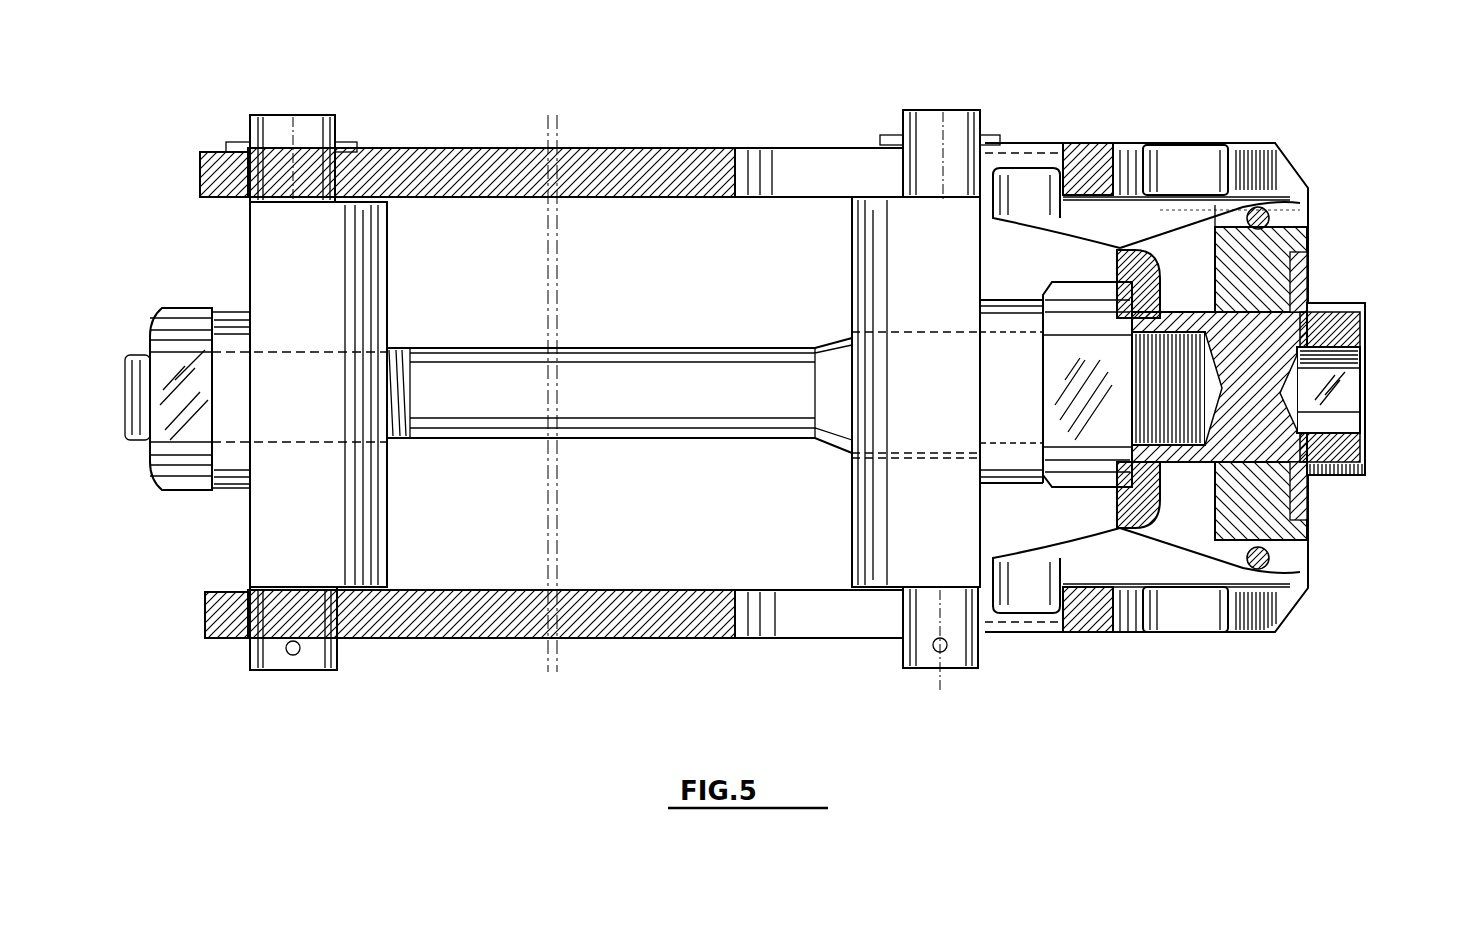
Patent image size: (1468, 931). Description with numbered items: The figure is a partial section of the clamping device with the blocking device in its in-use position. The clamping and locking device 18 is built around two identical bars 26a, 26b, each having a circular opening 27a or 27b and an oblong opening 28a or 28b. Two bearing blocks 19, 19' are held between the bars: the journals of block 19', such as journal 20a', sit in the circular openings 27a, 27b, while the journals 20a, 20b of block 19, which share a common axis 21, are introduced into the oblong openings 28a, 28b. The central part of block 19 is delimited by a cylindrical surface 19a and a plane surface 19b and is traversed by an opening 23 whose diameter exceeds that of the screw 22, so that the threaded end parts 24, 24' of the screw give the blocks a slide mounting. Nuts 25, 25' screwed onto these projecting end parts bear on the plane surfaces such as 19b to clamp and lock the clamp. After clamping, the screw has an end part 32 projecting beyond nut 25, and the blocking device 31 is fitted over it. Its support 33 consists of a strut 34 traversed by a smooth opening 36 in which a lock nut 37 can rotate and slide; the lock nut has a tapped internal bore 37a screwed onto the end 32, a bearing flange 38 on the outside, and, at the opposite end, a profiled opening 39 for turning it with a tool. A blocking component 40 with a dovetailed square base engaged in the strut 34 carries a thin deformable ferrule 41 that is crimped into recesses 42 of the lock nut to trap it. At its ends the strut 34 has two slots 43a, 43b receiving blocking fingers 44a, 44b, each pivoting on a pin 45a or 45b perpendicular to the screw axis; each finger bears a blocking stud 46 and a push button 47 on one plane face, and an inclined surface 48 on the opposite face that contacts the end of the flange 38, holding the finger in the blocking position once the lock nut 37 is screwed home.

The clamping and locking device 18 is at (667, 122).
The bearing block 19 is at (880, 392).
The bearing block 19' is at (361, 394).
The cylindrical surface 19a is at (852, 237).
The plane surface 19b is at (995, 233).
The journal 20a is at (940, 126).
The journal 20a' is at (291, 129).
The journal 20b is at (305, 657).
The common axis 21 is at (945, 125).
The screw 22 is at (640, 408).
The opening 23 is at (950, 460).
The threaded end part 24 is at (916, 363).
The threaded end part 24' is at (436, 422).
The nut 25 is at (1134, 388).
The nut 25' is at (256, 427).
The bar 26a is at (442, 162).
The bar 26b is at (660, 628).
The circular opening 27a is at (243, 168).
The circular opening 27b is at (243, 617).
The oblong opening 28a is at (805, 162).
The oblong opening 28b is at (867, 622).
The blocking device 31 is at (1325, 137).
The projecting end part 32 is at (1127, 387).
The support 33 is at (1292, 557).
The strut 34 is at (1300, 250).
The smooth opening 36 is at (1305, 283).
The lock nut 37 is at (1368, 322).
The tapped internal bore 37a is at (1185, 312).
The bearing flange 38 is at (1162, 478).
The profiled opening 39 is at (1370, 400).
The blocking component 40 is at (1350, 262).
The deformable ferrule 41 is at (1308, 512).
The recesses 42 is at (1365, 305).
The slot 43a is at (1302, 235).
The slot 43b is at (1305, 572).
The blocking finger 44a is at (1093, 175).
The blocking finger 44b is at (1125, 573).
The pin 45a is at (1250, 190).
The pin 45b is at (1287, 600).
The blocking stud 46 is at (1033, 158).
The push button 47 is at (1183, 170).
The inclined surface 48 is at (1195, 210).